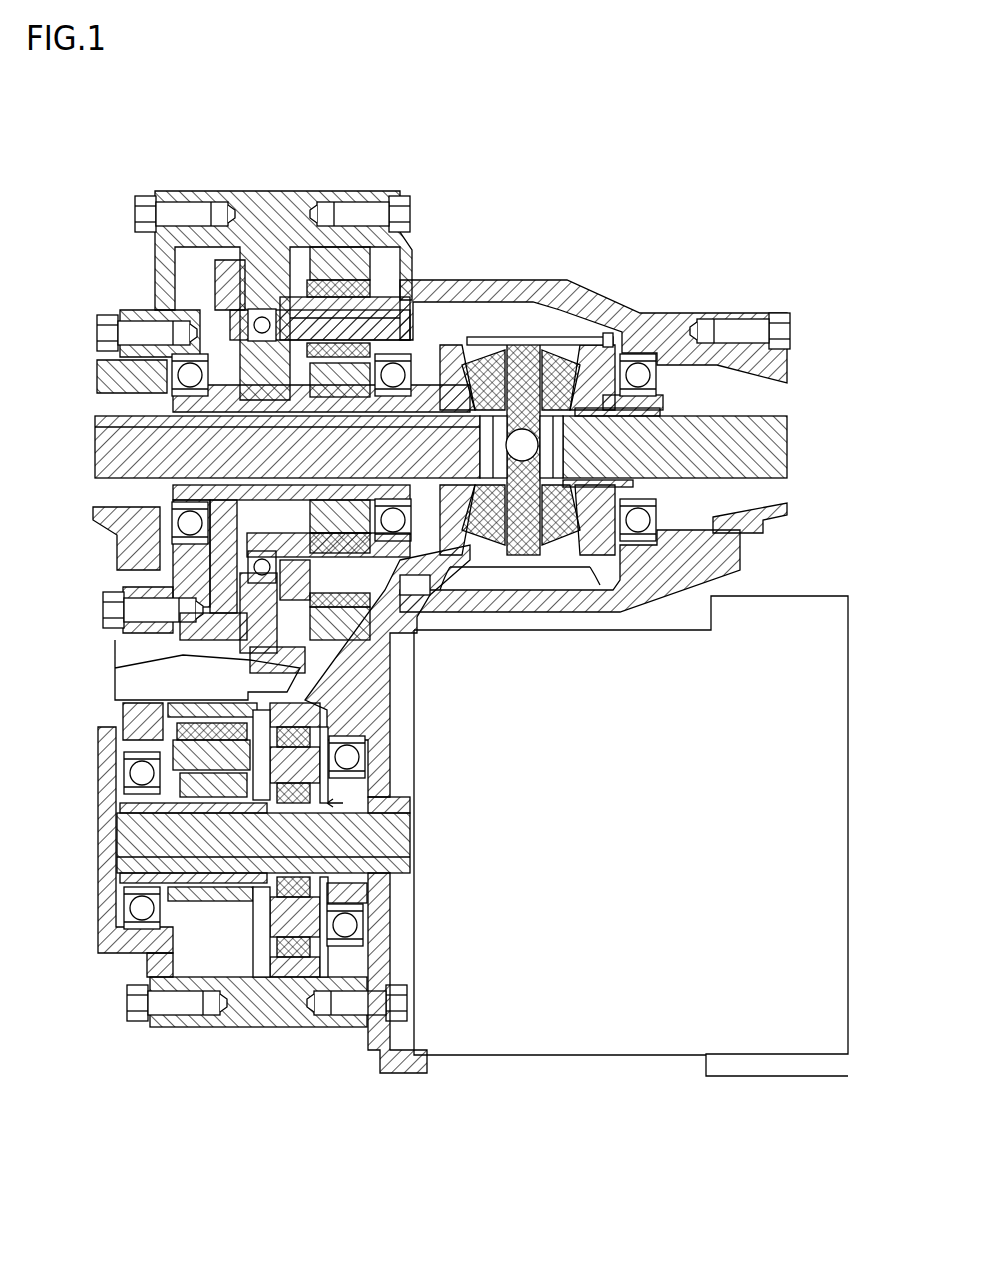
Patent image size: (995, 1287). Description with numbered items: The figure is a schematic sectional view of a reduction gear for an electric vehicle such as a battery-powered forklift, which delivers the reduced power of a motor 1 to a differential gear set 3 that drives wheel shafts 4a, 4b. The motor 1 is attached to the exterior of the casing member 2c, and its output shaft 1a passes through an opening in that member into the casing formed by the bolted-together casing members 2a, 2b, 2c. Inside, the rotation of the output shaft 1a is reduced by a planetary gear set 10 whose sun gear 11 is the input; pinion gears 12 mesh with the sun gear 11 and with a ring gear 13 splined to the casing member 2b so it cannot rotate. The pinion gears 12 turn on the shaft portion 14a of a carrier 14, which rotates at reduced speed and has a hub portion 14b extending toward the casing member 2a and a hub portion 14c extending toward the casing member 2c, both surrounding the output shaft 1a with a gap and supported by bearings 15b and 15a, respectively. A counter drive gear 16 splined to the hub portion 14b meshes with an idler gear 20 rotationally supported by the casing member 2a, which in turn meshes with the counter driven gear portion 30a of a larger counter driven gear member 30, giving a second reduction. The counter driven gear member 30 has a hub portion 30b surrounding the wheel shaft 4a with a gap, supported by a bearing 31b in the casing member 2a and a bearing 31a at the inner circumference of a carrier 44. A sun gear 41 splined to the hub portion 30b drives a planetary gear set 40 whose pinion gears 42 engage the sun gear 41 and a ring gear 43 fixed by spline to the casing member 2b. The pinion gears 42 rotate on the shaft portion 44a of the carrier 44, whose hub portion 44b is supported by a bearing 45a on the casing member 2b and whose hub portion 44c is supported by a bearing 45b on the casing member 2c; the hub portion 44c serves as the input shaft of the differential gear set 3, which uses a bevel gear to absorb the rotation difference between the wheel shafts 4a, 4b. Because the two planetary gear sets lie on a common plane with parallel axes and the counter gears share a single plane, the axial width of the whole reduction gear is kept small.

The motor 1 is at (827, 790).
The output shaft 1a is at (127, 830).
The casing member 2a is at (162, 252).
The casing member 2b is at (302, 191).
The casing member 2c is at (677, 318).
The differential gear set 3 is at (517, 580).
The wheel shaft 4a is at (100, 455).
The wheel shaft 4b is at (787, 448).
The planetary gear set 10 is at (382, 802).
The sun gear 11 is at (120, 857).
The pinion gear 12 is at (269, 953).
The ring gear 13 is at (289, 977).
The carrier 14 is at (270, 937).
The shaft portion 14a is at (269, 923).
The hub portion 14b is at (122, 875).
The hub portion 14c is at (367, 895).
The bearing 15a is at (347, 935).
The bearing 15b is at (140, 910).
The counter drive gear 16 is at (152, 960).
The idler gear 20 is at (150, 737).
The counter driven gear member 30 is at (187, 583).
The counter driven gear portion 30a is at (187, 633).
The hub portion 30b is at (175, 477).
The bearing 31a is at (442, 593).
The bearing 31b is at (152, 545).
The planetary gear set 40 is at (175, 400).
The sun gear 41 is at (100, 428).
The pinion gear 42 is at (402, 270).
The ring gear 43 is at (407, 250).
The carrier 44 is at (527, 340).
The shaft portion 44a is at (469, 337).
The hub portion 44b is at (272, 345).
The hub portion 44c is at (595, 530).
The bearing 45a is at (264, 325).
The bearing 45b is at (642, 517).